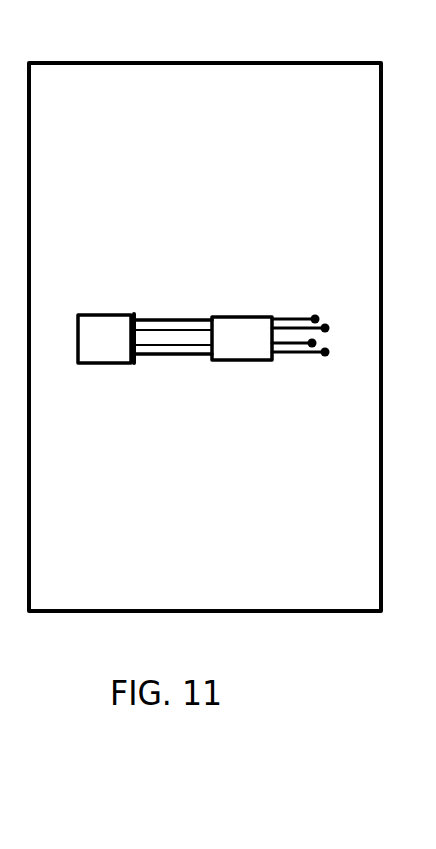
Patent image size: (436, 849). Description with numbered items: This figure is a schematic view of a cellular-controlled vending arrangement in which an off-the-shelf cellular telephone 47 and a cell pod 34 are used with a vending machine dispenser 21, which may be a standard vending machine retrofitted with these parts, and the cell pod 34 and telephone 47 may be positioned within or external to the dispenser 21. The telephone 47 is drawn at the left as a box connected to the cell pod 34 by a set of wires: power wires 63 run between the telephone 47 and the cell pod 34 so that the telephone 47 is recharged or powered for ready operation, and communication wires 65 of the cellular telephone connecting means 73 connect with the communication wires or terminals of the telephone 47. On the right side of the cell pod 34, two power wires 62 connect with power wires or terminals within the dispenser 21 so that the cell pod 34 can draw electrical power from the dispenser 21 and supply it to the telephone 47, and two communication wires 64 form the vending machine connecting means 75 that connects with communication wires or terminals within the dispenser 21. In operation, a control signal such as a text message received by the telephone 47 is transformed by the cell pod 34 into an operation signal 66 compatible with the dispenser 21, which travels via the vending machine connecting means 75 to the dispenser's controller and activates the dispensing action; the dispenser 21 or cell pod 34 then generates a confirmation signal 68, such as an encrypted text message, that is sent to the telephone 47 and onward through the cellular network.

The vending machine dispenser 21 is at (337, 62).
The cellular telephone connecting means 73 is at (176, 233).
The vending machine connecting means 75 is at (331, 240).
The cellular telephone 47 is at (98, 328).
The confirmation signal 68 is at (145, 368).
The power wires 63 is at (177, 304).
The communication wires 65 is at (193, 359).
The cell pod 34 is at (233, 322).
The power wires 62 is at (306, 306).
The communication wires 64 is at (312, 360).
The operation signal 66 is at (328, 365).